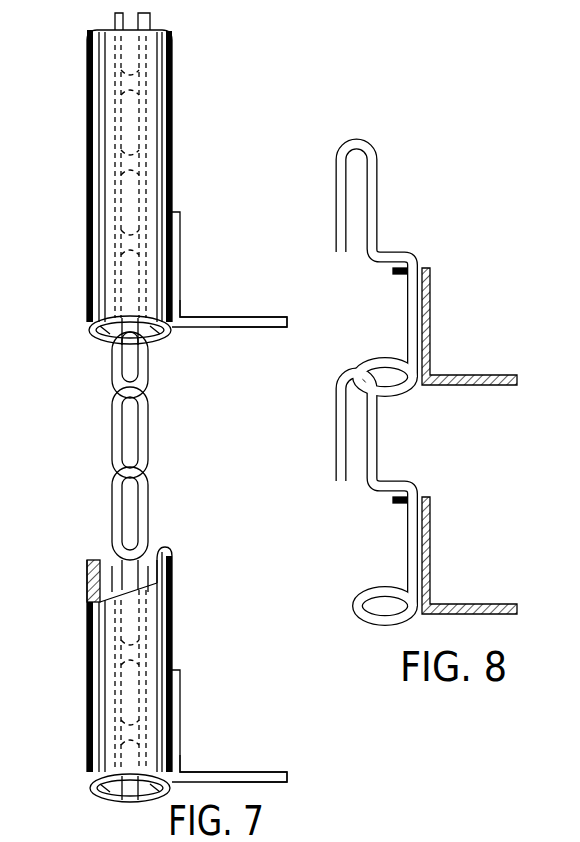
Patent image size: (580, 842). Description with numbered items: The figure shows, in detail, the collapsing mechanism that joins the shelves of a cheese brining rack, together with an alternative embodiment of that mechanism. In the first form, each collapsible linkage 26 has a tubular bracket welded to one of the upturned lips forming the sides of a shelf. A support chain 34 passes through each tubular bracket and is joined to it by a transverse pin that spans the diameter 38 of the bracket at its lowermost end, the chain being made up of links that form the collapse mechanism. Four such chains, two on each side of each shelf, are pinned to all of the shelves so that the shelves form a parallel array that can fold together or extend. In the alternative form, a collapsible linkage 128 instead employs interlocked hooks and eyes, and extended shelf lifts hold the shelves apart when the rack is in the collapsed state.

In FIG. 7, the collapsible linkage 26 is at (194, 112).
In FIG. 7, the support chain 34 is at (120, 462).
In FIG. 7, the diameter 38 is at (88, 336).
In FIG. 8, the collapsible linkage 128 is at (340, 284).